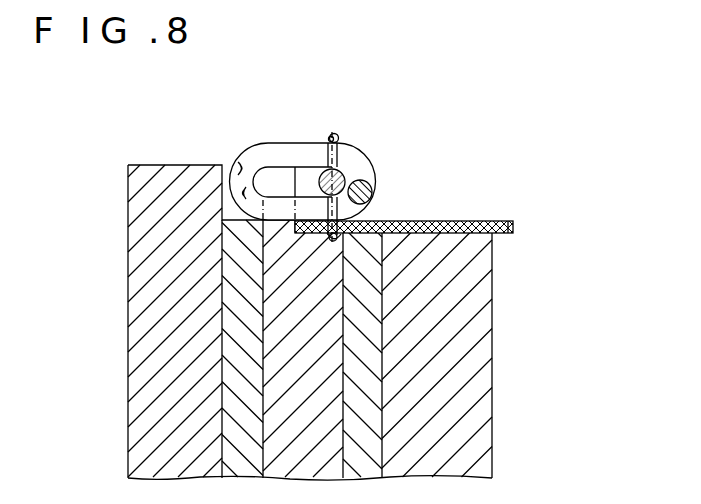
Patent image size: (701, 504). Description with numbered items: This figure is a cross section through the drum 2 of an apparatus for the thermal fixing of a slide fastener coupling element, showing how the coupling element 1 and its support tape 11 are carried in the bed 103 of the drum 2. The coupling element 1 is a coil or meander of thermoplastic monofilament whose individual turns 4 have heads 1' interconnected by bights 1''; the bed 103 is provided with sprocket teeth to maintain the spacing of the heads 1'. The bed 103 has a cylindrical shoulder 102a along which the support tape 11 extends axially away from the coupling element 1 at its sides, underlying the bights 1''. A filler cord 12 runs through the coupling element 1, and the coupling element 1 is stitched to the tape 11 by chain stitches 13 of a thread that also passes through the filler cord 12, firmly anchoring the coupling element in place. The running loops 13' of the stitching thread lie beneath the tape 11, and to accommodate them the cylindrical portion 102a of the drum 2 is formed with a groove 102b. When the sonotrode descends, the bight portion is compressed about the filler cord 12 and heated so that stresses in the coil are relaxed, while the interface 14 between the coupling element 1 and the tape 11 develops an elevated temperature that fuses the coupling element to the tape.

The coupling element 1 is at (303, 158).
The heads 1' is at (224, 168).
The bights 1'' is at (380, 170).
The drum 2 is at (504, 430).
The individual turns 4 is at (278, 153).
The support tape 11 is at (462, 268).
The filler cord 12 is at (325, 170).
The chain stitches 13 is at (349, 121).
The running loops 13' is at (321, 252).
The interface 14 is at (378, 215).
The cylindrical shoulder 102a is at (456, 236).
The groove 102b is at (371, 243).
The bed 103 is at (233, 211).